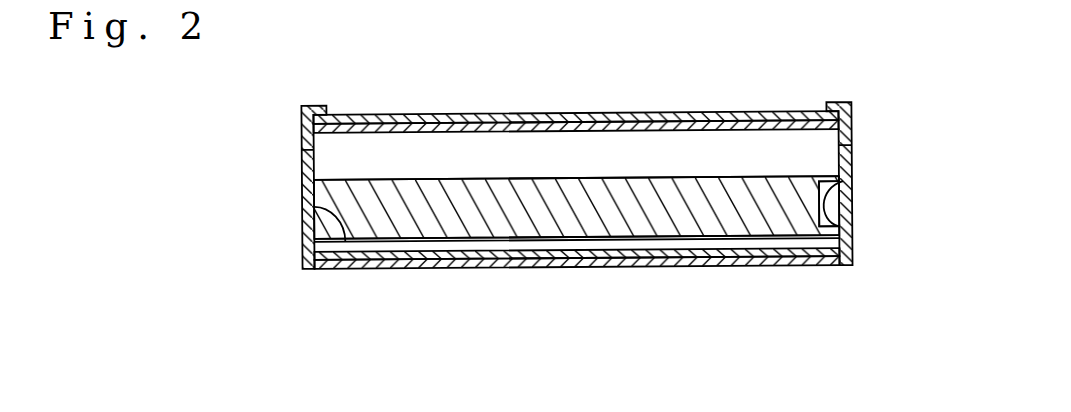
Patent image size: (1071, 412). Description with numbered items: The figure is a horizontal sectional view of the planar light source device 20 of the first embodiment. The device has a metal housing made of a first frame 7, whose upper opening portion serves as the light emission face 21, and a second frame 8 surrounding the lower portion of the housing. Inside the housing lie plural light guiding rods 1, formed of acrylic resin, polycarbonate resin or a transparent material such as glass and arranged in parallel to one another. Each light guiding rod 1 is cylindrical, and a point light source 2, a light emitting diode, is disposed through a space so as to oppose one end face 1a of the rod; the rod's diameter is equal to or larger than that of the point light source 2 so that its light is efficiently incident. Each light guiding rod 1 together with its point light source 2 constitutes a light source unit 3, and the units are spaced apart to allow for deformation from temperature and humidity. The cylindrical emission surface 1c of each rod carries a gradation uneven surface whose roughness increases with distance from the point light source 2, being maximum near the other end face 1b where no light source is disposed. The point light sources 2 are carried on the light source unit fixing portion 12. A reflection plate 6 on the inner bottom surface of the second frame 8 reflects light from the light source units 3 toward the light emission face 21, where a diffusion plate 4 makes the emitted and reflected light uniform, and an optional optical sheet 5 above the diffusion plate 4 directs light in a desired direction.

The light guiding rod 1 is at (790, 232).
The end face 1a is at (843, 183).
The other end face 1b is at (345, 240).
The emission surface 1c is at (738, 178).
The point light source 2 is at (826, 242).
The light source unit 3 is at (758, 349).
The diffusion plate 4 is at (511, 128).
The optical sheet 5 is at (436, 113).
The reflection plate 6 is at (637, 255).
The first frame 7 is at (853, 110).
The second frame 8 is at (850, 262).
The light source unit fixing portion 12 is at (853, 207).
The planar light source device 20 is at (845, 297).
The light emission face 21 is at (665, 112).